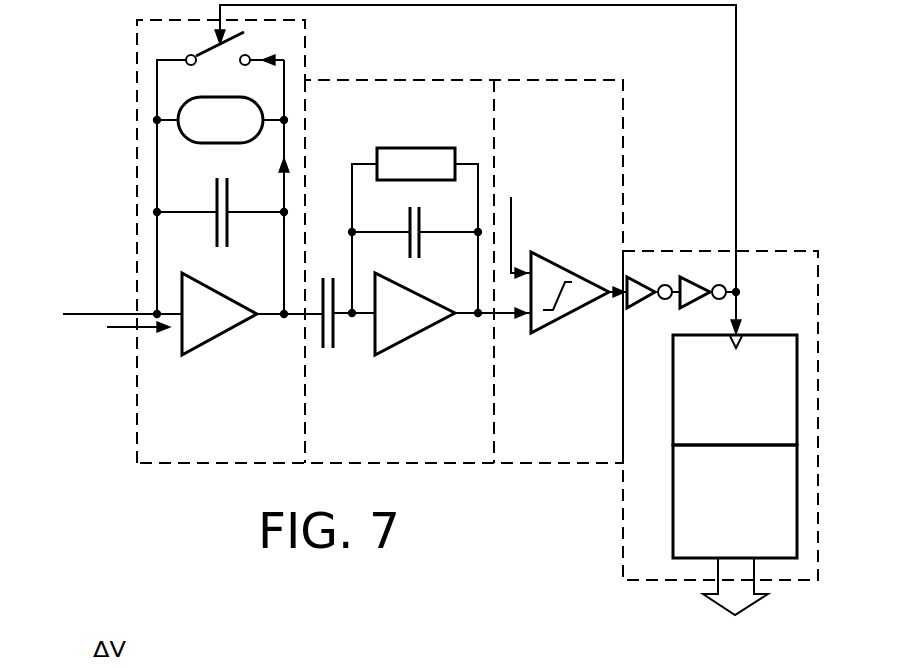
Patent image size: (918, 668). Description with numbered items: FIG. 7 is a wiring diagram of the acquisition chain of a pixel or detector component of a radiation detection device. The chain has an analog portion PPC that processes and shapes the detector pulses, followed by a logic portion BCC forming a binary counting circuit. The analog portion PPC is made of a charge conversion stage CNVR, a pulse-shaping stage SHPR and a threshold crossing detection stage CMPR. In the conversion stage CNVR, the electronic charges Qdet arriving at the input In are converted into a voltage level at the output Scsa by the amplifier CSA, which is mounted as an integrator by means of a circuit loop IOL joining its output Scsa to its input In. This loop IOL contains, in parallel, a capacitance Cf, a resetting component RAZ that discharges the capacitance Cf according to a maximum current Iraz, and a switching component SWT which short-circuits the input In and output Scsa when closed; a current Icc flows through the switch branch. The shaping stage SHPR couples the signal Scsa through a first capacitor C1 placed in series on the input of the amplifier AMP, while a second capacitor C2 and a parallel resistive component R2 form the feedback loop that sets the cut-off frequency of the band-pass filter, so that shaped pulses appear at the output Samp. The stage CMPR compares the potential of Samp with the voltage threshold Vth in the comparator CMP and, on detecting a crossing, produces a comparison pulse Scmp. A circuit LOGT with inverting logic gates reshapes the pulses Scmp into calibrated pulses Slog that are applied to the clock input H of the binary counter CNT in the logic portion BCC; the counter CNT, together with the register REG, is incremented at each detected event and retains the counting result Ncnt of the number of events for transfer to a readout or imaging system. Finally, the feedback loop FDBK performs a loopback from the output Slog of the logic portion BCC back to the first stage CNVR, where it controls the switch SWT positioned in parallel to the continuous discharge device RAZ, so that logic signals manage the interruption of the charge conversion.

The analog portion PPC is at (135, 440).
The charge conversion stage CNVR is at (221, 435).
The pulse-shaping stage SHPR is at (395, 433).
The threshold crossing detection stage CMPR is at (556, 430).
The binary counting circuit BCC is at (623, 517).
The feedback loop FDBK is at (736, 117).
The switching component SWT is at (213, 42).
The switch current Icc is at (270, 50).
The circuit loop IOL is at (161, 63).
The maximum current value Iraz is at (262, 165).
The resetting component RAZ is at (220, 120).
The capacitance Cf is at (228, 232).
The input In is at (122, 299).
The electronic charges Qdet is at (138, 339).
The CSA amplifier CSA is at (212, 318).
The output Scsa is at (286, 327).
The first capacitor C1 is at (335, 318).
The resistive component R2 is at (398, 158).
The second capacitor C2 is at (421, 225).
The amplifier AMP is at (403, 318).
The output Samp is at (488, 325).
The voltage threshold Vth is at (515, 225).
The comparator CMP is at (549, 263).
The comparison signal Scmp is at (605, 309).
The logic gate circuit LOGT is at (700, 278).
The logic level pulse signal Slog is at (765, 281).
The binary counter CNT is at (735, 390).
The clock input H is at (737, 365).
The register REG is at (735, 501).
The counting result Ncnt is at (735, 613).